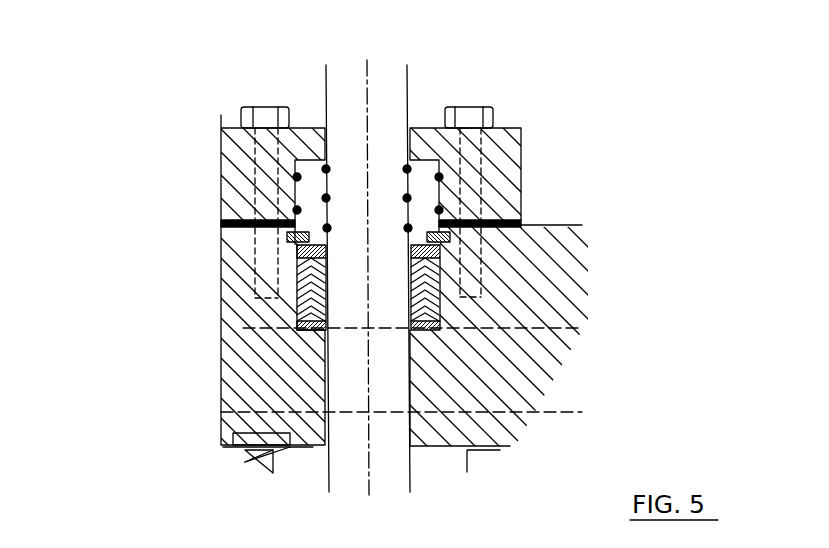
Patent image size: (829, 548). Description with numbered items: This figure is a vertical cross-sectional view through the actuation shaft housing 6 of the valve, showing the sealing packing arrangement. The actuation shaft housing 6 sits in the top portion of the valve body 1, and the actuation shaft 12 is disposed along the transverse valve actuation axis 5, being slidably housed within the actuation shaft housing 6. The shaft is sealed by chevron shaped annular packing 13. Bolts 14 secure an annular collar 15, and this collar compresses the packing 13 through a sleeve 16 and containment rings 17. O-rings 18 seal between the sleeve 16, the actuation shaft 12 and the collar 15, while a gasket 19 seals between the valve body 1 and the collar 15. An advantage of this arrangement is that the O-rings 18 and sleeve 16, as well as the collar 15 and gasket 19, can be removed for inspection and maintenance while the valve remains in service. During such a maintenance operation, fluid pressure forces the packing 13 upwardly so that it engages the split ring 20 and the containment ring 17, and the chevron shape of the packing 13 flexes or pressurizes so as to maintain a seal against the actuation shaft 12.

The valve body 1 is at (515, 397).
The transverse valve actuation axis 5 is at (374, 483).
The actuation shaft housing 6 is at (212, 287).
The actuation shaft 12 is at (372, 83).
The chevron shaped annular packing 13 is at (300, 303).
The bolts 14 is at (253, 106).
The annular collar 15 is at (527, 173).
The sleeve 16 is at (308, 192).
The containment rings 17 is at (440, 250).
The O-rings 18 is at (334, 161).
The gasket 19 is at (527, 222).
The split ring 20 is at (285, 236).